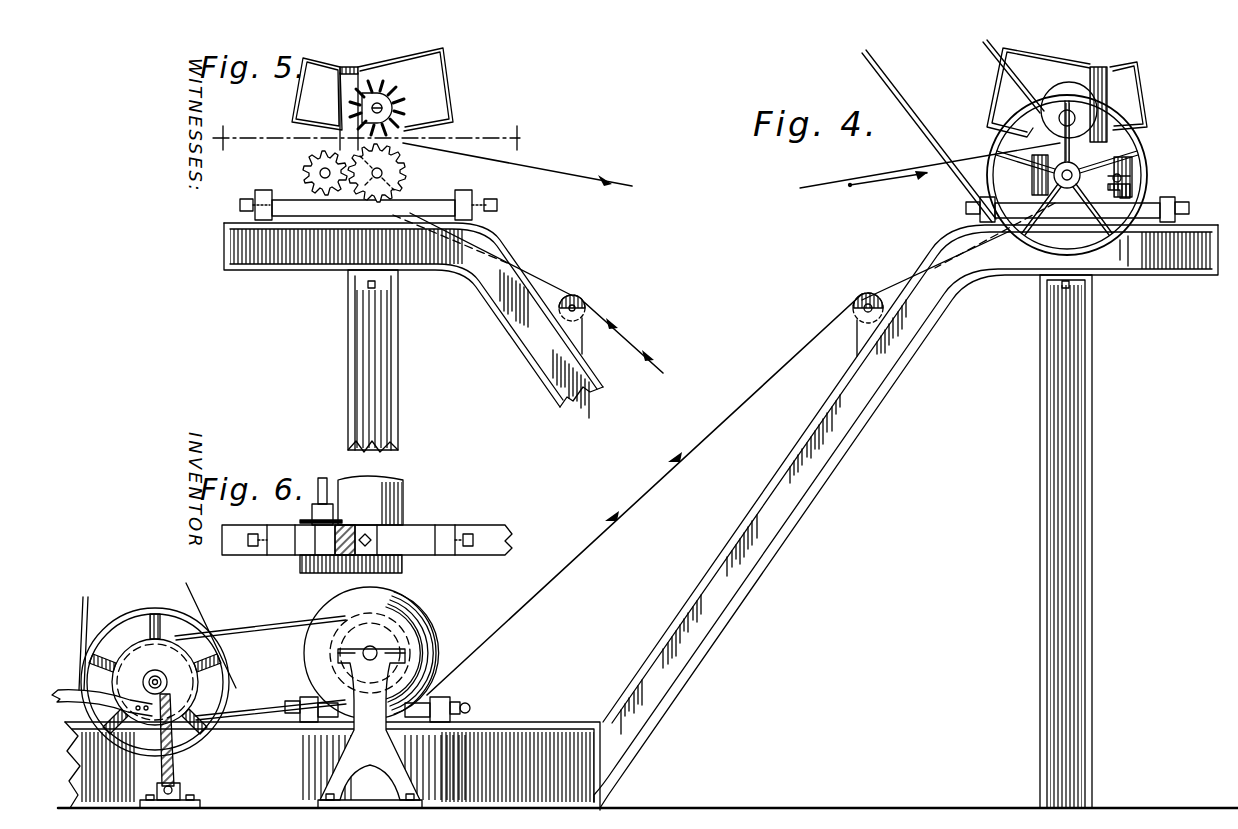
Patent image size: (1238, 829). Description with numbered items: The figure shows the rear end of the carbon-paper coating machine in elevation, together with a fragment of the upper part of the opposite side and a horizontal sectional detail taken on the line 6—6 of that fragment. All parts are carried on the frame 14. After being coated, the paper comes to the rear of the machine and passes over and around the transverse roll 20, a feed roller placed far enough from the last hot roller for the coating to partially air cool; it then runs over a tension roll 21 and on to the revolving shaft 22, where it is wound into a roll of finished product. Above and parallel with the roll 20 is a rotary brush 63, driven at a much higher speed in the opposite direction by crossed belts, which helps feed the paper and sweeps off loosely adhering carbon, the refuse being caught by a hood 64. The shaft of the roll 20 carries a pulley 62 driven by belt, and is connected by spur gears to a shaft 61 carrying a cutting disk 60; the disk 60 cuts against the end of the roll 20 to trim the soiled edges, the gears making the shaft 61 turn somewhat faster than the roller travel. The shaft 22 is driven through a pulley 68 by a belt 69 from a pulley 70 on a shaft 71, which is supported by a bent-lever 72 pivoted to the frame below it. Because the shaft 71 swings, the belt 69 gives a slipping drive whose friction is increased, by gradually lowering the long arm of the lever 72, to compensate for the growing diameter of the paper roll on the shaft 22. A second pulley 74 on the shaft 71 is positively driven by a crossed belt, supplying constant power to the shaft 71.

In FIG. 5, the section line 6— 6 is at (364, 138).
In FIG. 5, the frame 14 is at (317, 281).
In FIG. 6, the frame 14 is at (503, 524).
In FIG. 4, the frame 14 is at (856, 436).
In FIG. 5, the transverse roll 20 is at (406, 164).
In FIG. 6, the transverse roll 20 is at (405, 501).
In FIG. 4, the transverse roll 20 is at (1032, 184).
In FIG. 5, the tension roll 21 is at (580, 297).
In FIG. 4, the tension roll 21 is at (866, 293).
In FIG. 4, the revolving shaft 22 is at (378, 650).
In FIG. 6, the cutting disk 60 is at (304, 520).
In FIG. 4, the cutting disk 60 is at (1132, 184).
In FIG. 6, the shaft 61 is at (320, 478).
In FIG. 4, the shaft 61 is at (1122, 172).
In FIG. 4, the pulley 62 is at (1143, 143).
In FIG. 5, the rotary brush 63 is at (397, 95).
In FIG. 4, the rotary brush 63 is at (1052, 93).
In FIG. 5, the hood 64 is at (447, 100).
In FIG. 4, the hood 64 is at (1147, 82).
In FIG. 4, the pulley 68 is at (392, 620).
In FIG. 4, the belt 69 is at (262, 630).
In FIG. 4, the pulley 70 is at (155, 682).
In FIG. 4, the shaft 71 is at (168, 681).
In FIG. 4, the bent-lever 72 is at (72, 690).
In FIG. 4, the second pulley 74 is at (122, 616).